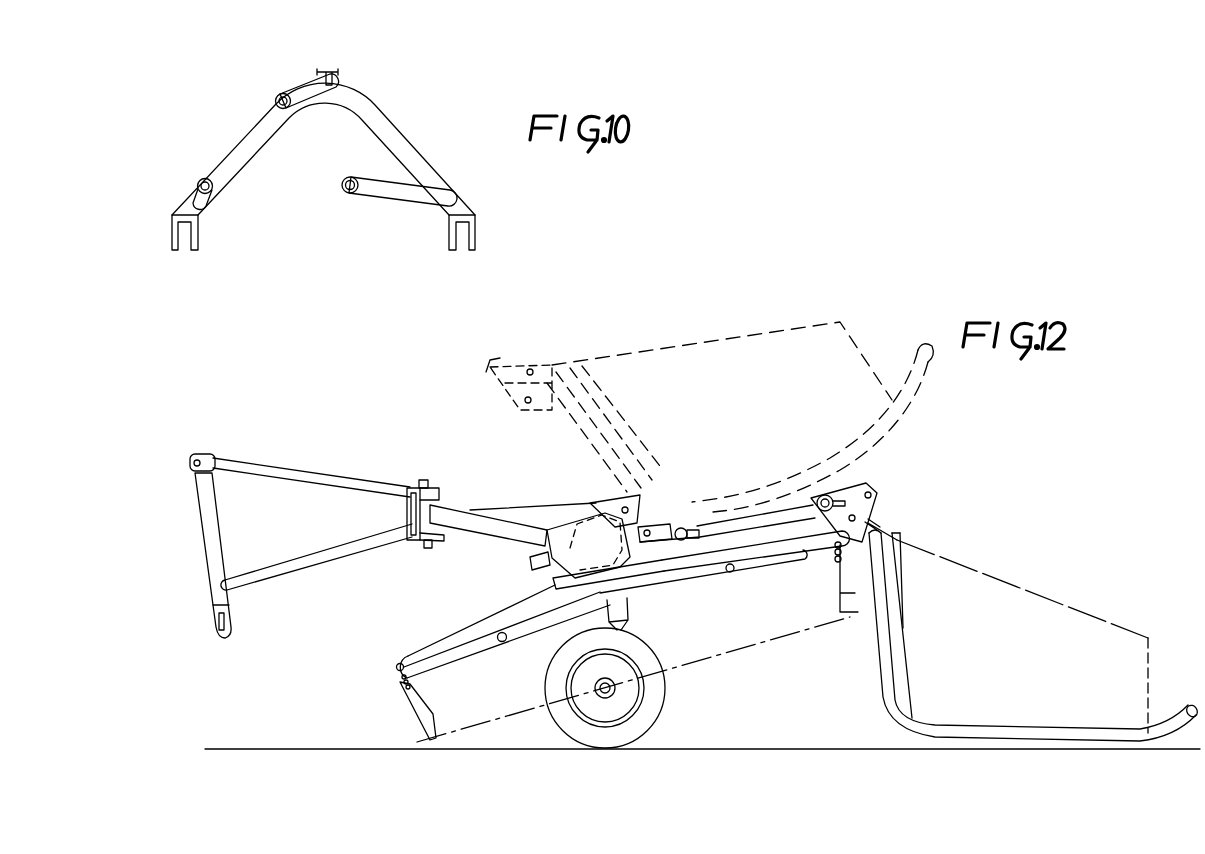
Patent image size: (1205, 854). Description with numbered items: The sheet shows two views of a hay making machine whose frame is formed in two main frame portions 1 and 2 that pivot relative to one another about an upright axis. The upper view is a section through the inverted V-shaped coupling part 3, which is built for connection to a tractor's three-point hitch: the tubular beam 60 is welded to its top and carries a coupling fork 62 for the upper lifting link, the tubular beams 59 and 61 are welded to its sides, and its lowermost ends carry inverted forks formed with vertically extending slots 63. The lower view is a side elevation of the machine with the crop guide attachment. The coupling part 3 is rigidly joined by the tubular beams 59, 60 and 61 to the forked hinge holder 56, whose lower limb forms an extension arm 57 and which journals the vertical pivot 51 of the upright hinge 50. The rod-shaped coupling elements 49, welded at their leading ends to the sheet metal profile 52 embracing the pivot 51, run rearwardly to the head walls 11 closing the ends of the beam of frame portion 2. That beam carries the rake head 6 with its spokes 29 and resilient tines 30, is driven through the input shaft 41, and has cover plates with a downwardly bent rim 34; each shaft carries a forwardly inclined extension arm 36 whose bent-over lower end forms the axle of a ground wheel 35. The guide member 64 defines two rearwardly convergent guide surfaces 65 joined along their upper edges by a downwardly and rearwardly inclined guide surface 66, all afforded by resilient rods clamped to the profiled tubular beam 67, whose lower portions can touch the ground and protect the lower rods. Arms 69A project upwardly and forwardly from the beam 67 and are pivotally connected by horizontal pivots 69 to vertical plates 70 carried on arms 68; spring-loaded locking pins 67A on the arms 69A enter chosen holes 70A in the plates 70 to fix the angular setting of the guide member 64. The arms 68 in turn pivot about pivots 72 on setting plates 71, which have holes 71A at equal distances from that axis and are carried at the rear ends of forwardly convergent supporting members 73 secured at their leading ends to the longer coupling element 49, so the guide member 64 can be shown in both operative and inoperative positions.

In FIG. 10, the main frame portion 1 is at (401, 212).
In FIG. 12, the main frame portion 1 is at (285, 565).
In FIG. 12, the main frame portion 2 is at (509, 551).
In FIG. 10, the coupling part 3 is at (400, 147).
In FIG. 12, the coupling part 3 is at (214, 547).
In FIG. 12, the rake head 6 is at (408, 660).
In FIG. 12, the head wall 11 is at (560, 575).
In FIG. 12, the spoke 29 is at (441, 648).
In FIG. 12, the resilient tine 30 is at (414, 711).
In FIG. 12, the rim 34 is at (595, 580).
In FIG. 12, the ground wheel 35 is at (550, 676).
In FIG. 12, the extension arm 36 is at (630, 626).
In FIG. 12, the input shaft 41 is at (528, 567).
In FIG. 12, the coupling element 49 is at (497, 508).
In FIG. 12, the upright hinge 50 is at (404, 553).
In FIG. 12, the pivot 51 is at (433, 480).
In FIG. 12, the sheet metal profile 52 is at (436, 500).
In FIG. 12, the hinge holder 56 is at (413, 488).
In FIG. 12, the extension arm 57 is at (447, 545).
In FIG. 10, the tubular beam 59 is at (203, 179).
In FIG. 12, the tubular beam 59 is at (316, 565).
In FIG. 10, the tubular beam 60 is at (297, 87).
In FIG. 12, the tubular beam 60 is at (315, 483).
In FIG. 10, the tubular beam 61 is at (368, 182).
In FIG. 10, the coupling fork 62 is at (339, 74).
In FIG. 12, the coupling fork 62 is at (222, 446).
In FIG. 12, the slot 63 is at (232, 622).
In FIG. 12, the guide member 64 is at (868, 652).
In FIG. 12, the guide surface 65 is at (1150, 668).
In FIG. 12, the guide surface 66 is at (982, 578).
In FIG. 12, the profiled tubular beam 67 is at (886, 674).
In FIG. 12, the spring-loaded locking pin 67A is at (840, 497).
In FIG. 12, the arm 68 is at (762, 527).
In FIG. 12, the pivot 69 is at (878, 518).
In FIG. 12, the arm 69A is at (897, 530).
In FIG. 12, the vertical plate 70 is at (858, 492).
In FIG. 12, the hole 70A is at (878, 499).
In FIG. 12, the setting plate 71 is at (650, 515).
In FIG. 12, the hole 71A is at (633, 500).
In FIG. 12, the pivot 72 is at (665, 528).
In FIG. 12, the supporting member 73 is at (533, 514).